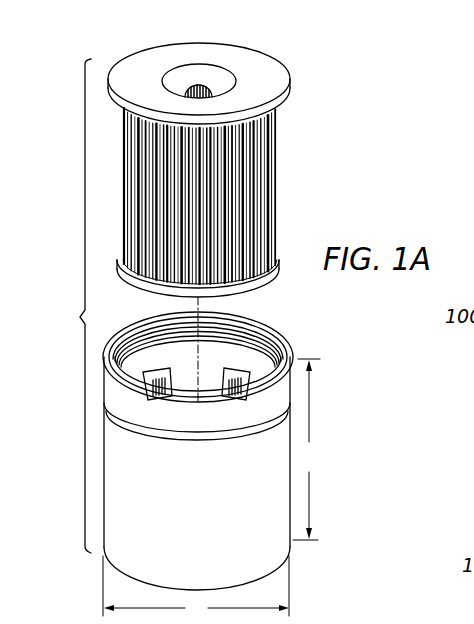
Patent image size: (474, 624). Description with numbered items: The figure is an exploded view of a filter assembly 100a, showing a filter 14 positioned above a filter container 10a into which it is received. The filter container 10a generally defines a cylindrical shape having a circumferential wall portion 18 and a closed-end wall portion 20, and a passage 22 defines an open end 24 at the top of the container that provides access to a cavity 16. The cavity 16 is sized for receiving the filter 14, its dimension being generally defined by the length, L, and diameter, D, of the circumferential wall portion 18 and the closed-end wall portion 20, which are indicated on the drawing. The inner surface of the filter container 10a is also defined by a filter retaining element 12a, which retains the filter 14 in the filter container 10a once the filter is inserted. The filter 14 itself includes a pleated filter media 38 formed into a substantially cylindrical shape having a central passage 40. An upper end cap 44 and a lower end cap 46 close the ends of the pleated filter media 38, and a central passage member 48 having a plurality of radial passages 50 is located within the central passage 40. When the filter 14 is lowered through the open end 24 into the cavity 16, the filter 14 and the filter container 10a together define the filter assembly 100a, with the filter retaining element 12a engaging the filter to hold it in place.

The filter assembly 100a is at (207, 310).
The filter container 10a is at (350, 434).
The filter retaining element 12a is at (203, 444).
The filter 14 is at (294, 181).
The cavity 16 is at (182, 392).
The circumferential wall portion 18 is at (90, 516).
The closed-end wall portion 20 is at (278, 580).
The passage 22 is at (254, 312).
The open end 24 is at (293, 346).
The pleated filter media 38 is at (288, 160).
The central passage 40 is at (196, 70).
The upper end cap 44 is at (270, 73).
The lower end cap 46 is at (128, 282).
The central passage member 48 is at (176, 78).
The radial passages 50 is at (208, 92).